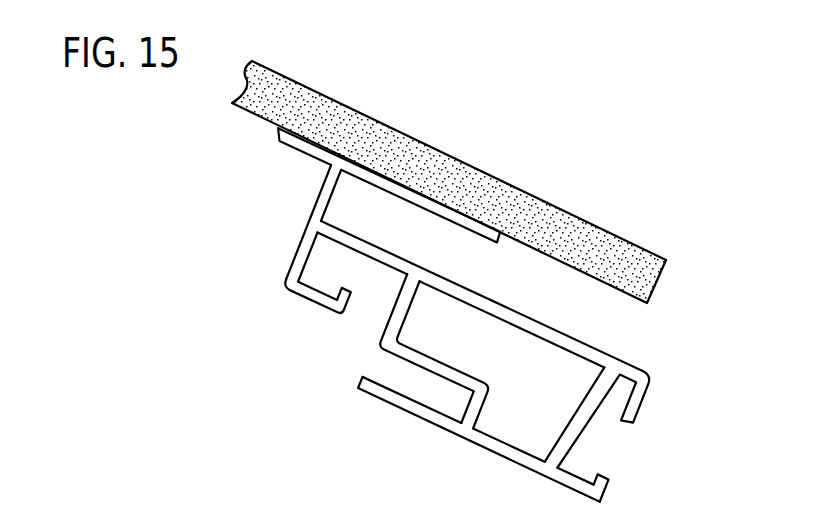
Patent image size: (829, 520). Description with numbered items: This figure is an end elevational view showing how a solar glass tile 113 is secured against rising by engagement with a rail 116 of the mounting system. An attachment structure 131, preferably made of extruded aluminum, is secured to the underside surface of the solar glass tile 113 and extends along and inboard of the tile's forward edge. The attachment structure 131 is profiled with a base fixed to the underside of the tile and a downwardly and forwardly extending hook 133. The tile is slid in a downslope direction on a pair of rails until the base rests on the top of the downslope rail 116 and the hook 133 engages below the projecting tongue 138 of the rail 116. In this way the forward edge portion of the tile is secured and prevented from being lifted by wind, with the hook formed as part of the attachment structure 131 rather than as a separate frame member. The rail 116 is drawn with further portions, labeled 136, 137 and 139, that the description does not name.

The solar glass tile 113 is at (348, 108).
The attachment structure 131 is at (285, 211).
The hook 133 is at (303, 295).
The projecting tongue 138 is at (373, 253).
The top wall of rail 136 is at (473, 293).
The rail 116 is at (629, 345).
The bottom flange of rail 137 is at (460, 435).
The lip of bottom flange 139 is at (634, 458).